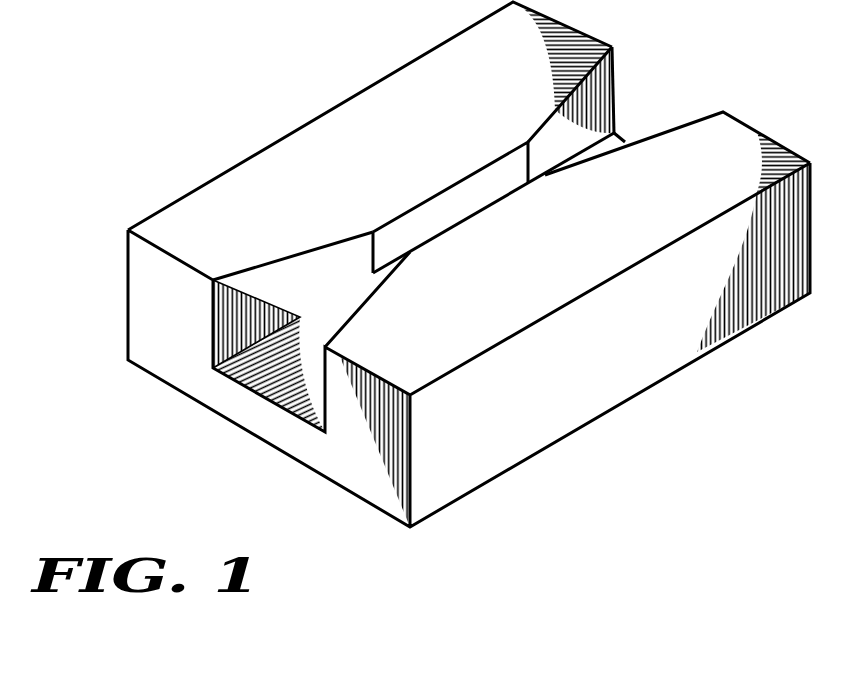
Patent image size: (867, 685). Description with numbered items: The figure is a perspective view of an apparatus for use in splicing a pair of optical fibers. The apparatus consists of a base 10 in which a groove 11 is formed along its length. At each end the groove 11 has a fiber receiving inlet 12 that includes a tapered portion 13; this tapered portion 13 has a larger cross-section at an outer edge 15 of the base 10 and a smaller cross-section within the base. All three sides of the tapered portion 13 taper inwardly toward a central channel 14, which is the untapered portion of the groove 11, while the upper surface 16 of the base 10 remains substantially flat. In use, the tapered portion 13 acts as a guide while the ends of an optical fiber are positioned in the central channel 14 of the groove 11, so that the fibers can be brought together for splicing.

The base 10 is at (217, 200).
The groove 11 is at (430, 212).
The fiber receiving inlet 12 is at (267, 373).
The tapered portion 13 is at (342, 263).
The central channel 14 is at (493, 177).
The outer edge 15 is at (617, 63).
The upper surface 16 is at (373, 107).